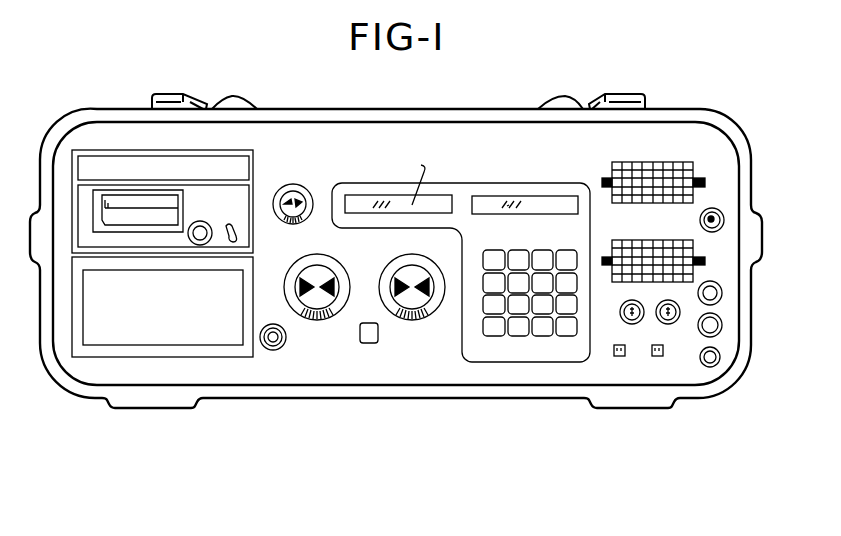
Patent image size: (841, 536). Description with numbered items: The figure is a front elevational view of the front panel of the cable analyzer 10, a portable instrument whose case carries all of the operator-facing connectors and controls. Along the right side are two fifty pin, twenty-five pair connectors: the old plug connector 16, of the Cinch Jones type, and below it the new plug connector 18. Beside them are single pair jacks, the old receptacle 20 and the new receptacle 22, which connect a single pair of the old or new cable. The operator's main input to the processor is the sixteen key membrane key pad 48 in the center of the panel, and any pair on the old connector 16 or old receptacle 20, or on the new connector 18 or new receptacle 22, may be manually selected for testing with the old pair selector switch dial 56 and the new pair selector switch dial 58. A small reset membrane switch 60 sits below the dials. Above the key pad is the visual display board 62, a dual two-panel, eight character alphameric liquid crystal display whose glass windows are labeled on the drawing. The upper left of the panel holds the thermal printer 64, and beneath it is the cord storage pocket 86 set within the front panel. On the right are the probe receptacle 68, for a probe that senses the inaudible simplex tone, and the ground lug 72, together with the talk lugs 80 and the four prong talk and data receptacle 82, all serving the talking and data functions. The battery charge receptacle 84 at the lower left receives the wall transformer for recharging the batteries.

The cable analyzer 10 is at (478, 103).
The old plug connector 16 is at (625, 161).
The new plug connector 18 is at (625, 239).
The old receptacle 20 is at (702, 207).
The new receptacle 22 is at (702, 283).
The key pad 48 is at (486, 330).
The old pair selector switch dial 56 is at (344, 252).
The new pair selector switch dial 58 is at (413, 255).
The reset membrane switch 60 is at (372, 343).
The visual display board 62 is at (492, 183).
The thermal printer 64 is at (173, 168).
The probe receptacle 68 is at (722, 325).
The ground lug 72 is at (720, 360).
The talk lugs 80 is at (661, 366).
The talk and data receptacle 82 is at (626, 304).
The battery charge receptacle 84 is at (280, 349).
The cord storage pocket 86 is at (154, 319).